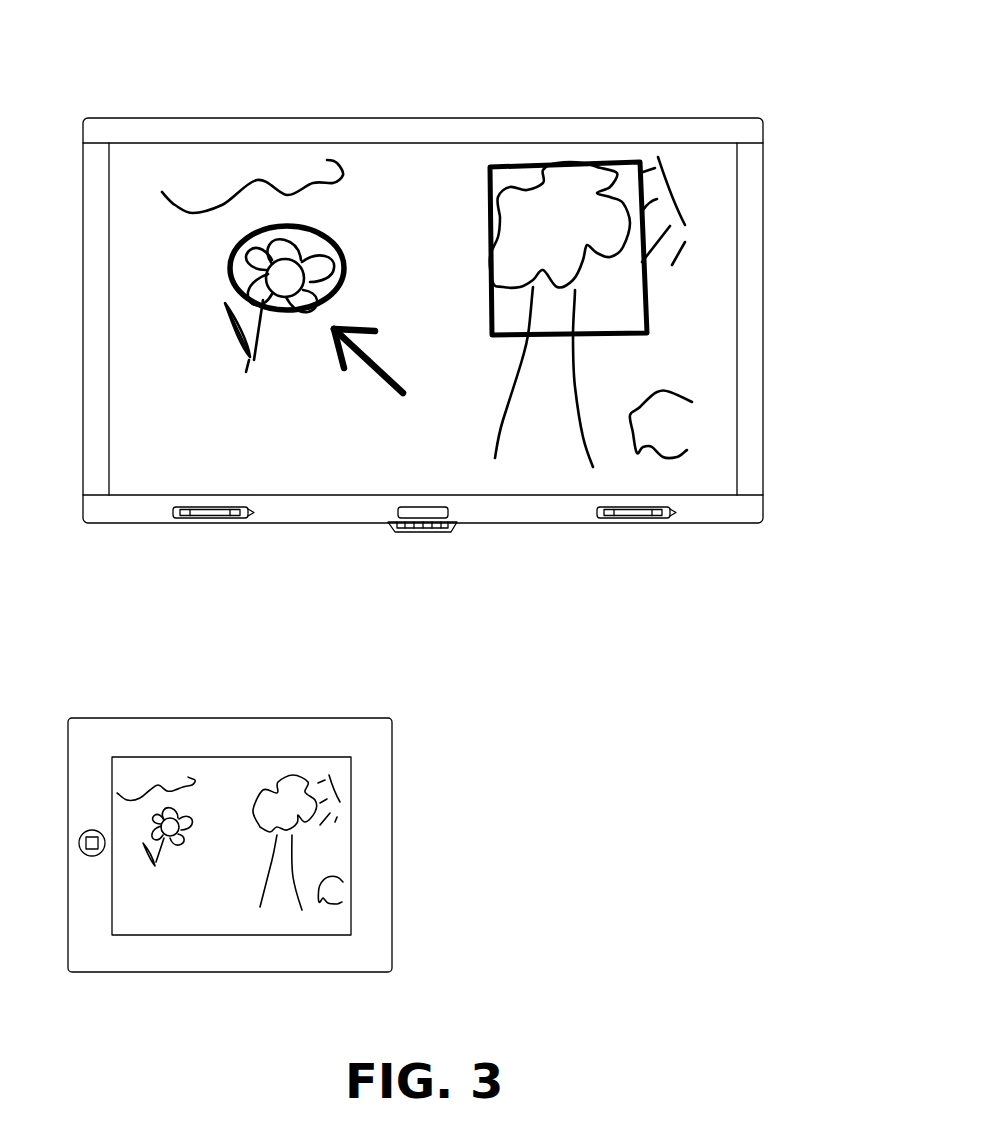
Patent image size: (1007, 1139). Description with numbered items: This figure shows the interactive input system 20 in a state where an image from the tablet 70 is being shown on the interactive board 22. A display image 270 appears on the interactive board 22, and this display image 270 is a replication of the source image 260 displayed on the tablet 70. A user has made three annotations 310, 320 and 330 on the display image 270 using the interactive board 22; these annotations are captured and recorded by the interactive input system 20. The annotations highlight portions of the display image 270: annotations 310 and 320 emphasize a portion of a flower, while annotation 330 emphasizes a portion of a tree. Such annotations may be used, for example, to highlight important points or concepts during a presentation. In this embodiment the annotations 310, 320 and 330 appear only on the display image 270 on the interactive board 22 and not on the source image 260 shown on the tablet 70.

The interactive input system 20 is at (768, 97).
The interactive board 22 is at (763, 435).
The display image 270 is at (702, 224).
The annotation 310 is at (231, 253).
The annotation 320 is at (338, 359).
The annotation 330 is at (486, 275).
The tablet 70 is at (393, 942).
The source image 260 is at (335, 842).